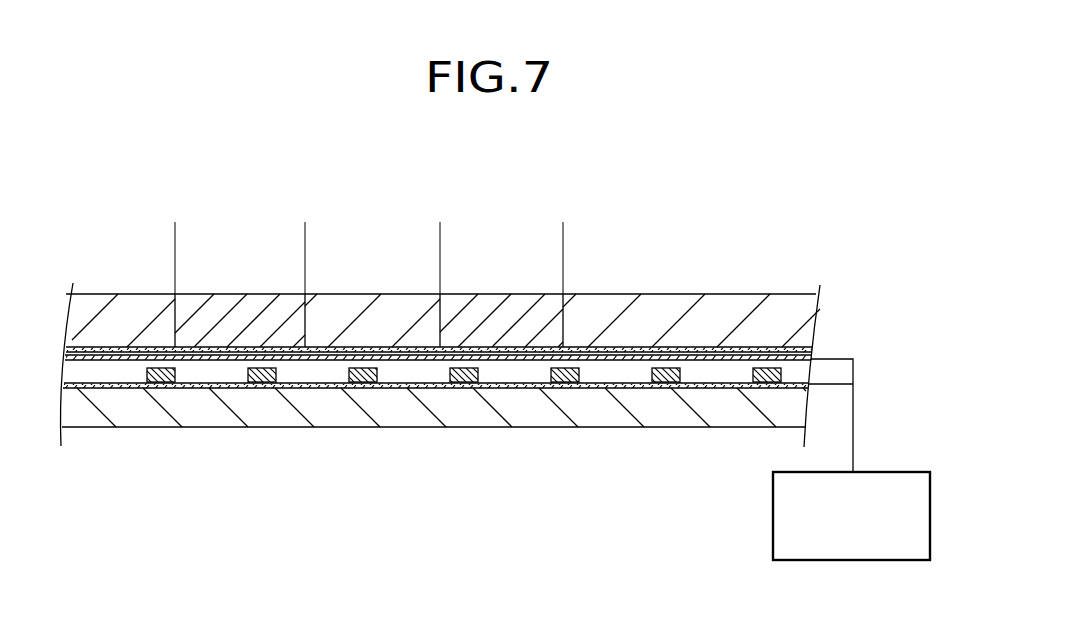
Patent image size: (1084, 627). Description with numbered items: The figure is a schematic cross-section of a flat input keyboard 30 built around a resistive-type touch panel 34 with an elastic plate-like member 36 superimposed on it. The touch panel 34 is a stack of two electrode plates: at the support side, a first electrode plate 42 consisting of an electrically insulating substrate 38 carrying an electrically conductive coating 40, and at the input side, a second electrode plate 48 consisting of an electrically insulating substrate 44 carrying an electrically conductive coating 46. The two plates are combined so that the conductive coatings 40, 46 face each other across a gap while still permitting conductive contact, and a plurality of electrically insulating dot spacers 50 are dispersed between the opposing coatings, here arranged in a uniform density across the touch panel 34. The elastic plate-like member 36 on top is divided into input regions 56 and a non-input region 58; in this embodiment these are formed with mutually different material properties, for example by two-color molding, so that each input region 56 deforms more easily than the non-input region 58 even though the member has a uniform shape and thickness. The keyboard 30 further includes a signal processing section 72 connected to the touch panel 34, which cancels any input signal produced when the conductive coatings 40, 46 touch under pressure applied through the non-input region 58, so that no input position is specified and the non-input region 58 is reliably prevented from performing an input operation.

The flat input keyboard 30 is at (692, 207).
The resistive-type touch panel 34 is at (522, 428).
The elastic plate-like member 36 is at (680, 296).
The electrically insulating substrate 38 is at (145, 410).
The electrically conductive coating 40 is at (203, 388).
The first electrode plate 42 is at (232, 507).
The electrically insulating substrate 44 is at (646, 350).
The electrically conductive coating 46 is at (594, 354).
The second electrode plate 48 is at (583, 239).
The dot spacers 50 is at (270, 388).
The input region 56 is at (175, 237).
The non-input region 58 is at (305, 237).
The signal processing section 72 is at (773, 520).